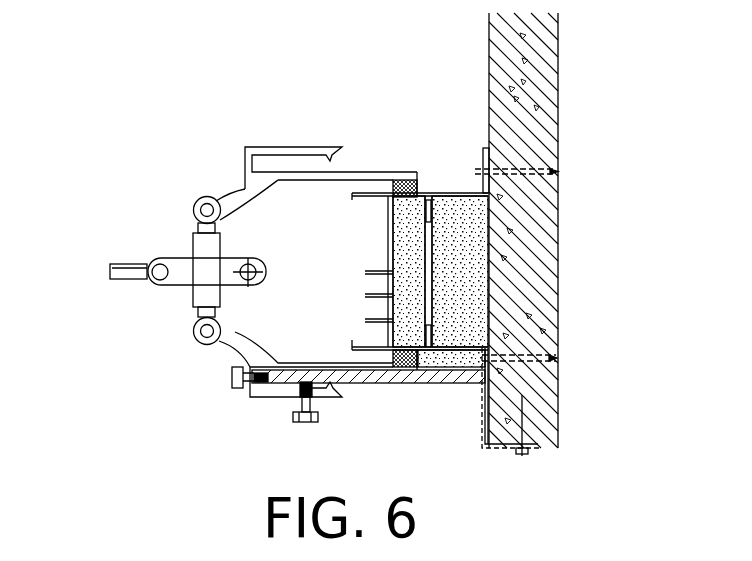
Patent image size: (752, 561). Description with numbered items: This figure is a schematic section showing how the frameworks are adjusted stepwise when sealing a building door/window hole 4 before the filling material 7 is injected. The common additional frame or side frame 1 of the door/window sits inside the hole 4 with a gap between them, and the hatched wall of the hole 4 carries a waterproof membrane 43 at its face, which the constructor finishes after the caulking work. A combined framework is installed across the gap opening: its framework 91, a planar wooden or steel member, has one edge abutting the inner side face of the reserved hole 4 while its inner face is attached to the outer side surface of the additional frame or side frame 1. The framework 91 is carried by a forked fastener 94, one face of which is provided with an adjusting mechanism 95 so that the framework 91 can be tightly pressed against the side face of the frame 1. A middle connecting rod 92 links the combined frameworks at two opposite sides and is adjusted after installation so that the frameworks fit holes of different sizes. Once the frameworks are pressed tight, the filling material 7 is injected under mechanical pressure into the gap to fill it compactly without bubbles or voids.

The common additional frame or side frame 1 is at (458, 368).
The building door/window hole 4 is at (520, 283).
The filling material 7 is at (447, 242).
The waterproof membrane 43 is at (519, 435).
The framework 91 is at (313, 385).
The middle connecting rod 92 is at (162, 260).
The forked fastener 94 is at (250, 193).
The adjusting mechanism 95 is at (232, 378).